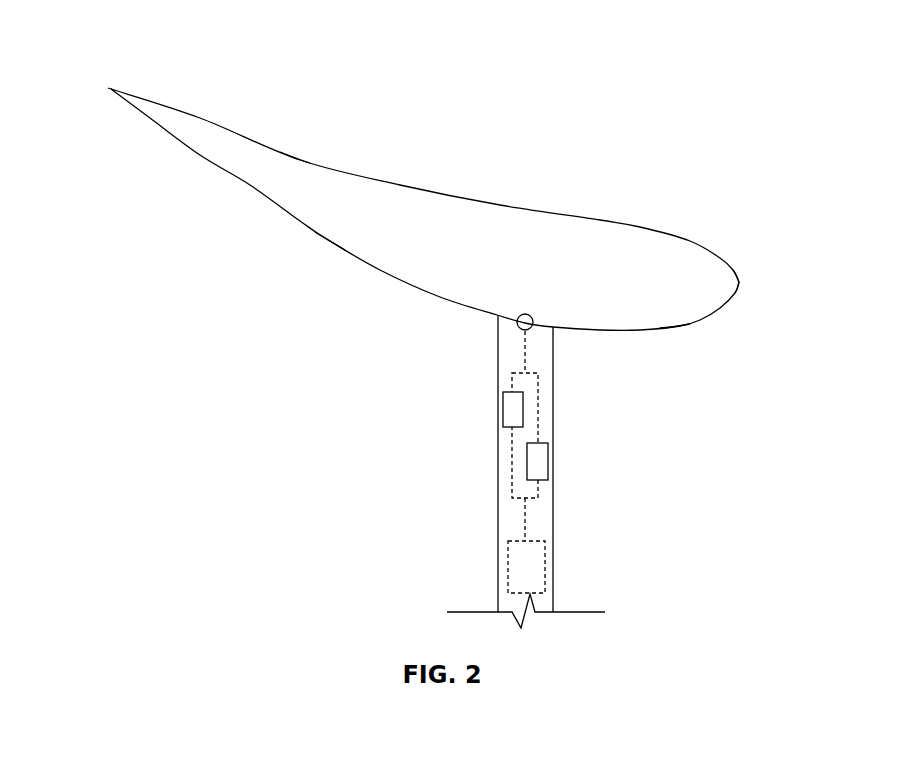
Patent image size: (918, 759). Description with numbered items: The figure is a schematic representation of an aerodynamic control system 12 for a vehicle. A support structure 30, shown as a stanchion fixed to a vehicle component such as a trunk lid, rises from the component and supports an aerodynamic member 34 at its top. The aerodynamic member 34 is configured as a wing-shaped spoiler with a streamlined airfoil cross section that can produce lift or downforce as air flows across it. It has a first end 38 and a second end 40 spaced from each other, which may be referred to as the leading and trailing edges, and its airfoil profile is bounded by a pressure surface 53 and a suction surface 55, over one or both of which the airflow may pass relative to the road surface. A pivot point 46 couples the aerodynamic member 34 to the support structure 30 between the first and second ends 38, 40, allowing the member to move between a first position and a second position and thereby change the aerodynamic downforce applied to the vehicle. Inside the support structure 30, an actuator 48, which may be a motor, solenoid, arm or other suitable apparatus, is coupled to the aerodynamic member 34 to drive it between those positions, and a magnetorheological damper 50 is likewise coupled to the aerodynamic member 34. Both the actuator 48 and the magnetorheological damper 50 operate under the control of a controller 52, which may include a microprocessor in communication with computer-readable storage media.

The aerodynamic control system 12 is at (221, 84).
The second end 40 is at (110, 89).
The pressure surface 53 is at (297, 157).
The suction surface 55 is at (328, 247).
The first end 38 is at (741, 284).
The aerodynamic member 34 is at (680, 305).
The pivot point 46 is at (528, 314).
The support structure 30 is at (540, 355).
The actuator 48 is at (502, 408).
The magnetorheological damper 50 is at (548, 462).
The controller 52 is at (547, 567).